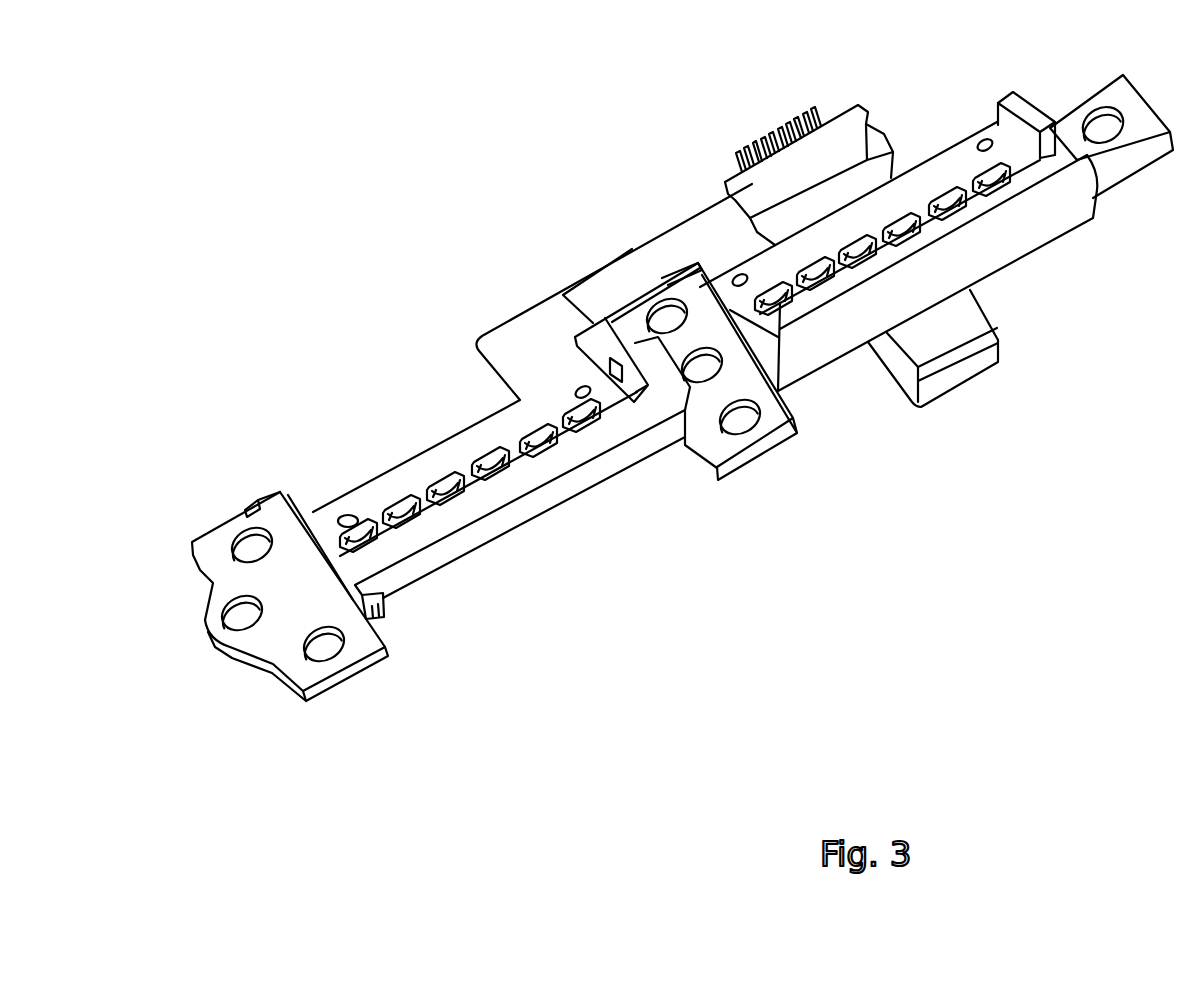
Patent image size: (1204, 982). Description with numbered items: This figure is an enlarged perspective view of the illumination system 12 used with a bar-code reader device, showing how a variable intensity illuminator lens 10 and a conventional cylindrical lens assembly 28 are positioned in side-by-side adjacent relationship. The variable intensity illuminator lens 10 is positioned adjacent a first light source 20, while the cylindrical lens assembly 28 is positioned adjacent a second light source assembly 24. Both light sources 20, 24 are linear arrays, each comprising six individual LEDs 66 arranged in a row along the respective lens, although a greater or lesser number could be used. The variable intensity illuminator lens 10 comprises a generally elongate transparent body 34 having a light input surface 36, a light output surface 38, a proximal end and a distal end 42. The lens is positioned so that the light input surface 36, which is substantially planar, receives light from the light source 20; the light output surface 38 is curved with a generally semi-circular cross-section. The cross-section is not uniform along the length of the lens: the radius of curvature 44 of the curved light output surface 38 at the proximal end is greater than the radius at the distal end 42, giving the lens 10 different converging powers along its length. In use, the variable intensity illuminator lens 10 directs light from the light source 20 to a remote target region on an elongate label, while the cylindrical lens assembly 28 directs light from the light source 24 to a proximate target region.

The variable intensity illuminator lens 10 is at (410, 614).
The illumination system 12 is at (1124, 74).
The first light source 20 is at (200, 580).
The second light source assembly 24 is at (715, 200).
The cylindrical lens assembly 28 is at (1072, 237).
The elongate transparent body 34 is at (452, 568).
The light input surface 36 is at (518, 457).
The light output surface 38 is at (508, 514).
The distal end 42 is at (340, 580).
The radius of curvature 44 is at (650, 462).
The LEDs 66 is at (532, 420).